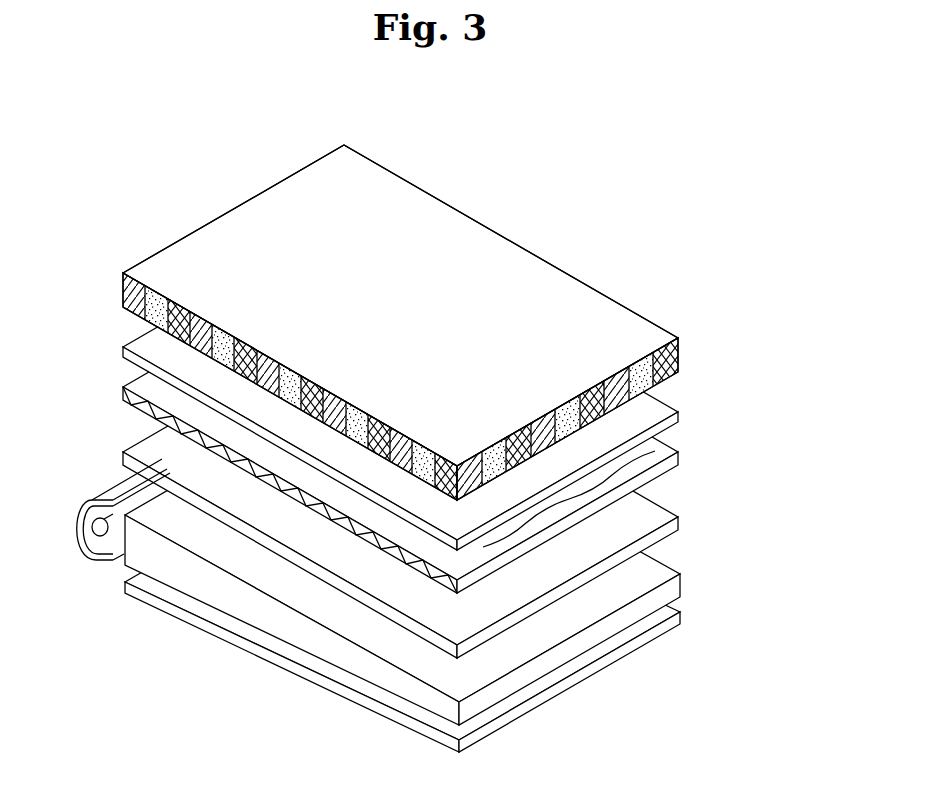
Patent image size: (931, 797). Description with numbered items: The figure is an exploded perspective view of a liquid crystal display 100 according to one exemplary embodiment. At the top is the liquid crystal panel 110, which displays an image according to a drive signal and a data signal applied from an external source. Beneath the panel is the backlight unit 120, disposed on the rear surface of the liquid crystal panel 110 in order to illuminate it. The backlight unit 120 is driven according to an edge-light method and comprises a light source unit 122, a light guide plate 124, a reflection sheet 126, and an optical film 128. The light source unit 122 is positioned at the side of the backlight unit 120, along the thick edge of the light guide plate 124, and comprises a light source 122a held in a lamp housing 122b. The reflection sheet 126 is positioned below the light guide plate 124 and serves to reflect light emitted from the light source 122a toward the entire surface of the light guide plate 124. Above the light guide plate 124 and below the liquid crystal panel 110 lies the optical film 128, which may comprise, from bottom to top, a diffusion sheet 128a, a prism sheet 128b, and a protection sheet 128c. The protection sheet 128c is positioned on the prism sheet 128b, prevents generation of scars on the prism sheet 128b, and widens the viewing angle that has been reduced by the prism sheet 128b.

The liquid crystal display 100 is at (543, 214).
The liquid crystal panel 110 is at (580, 287).
The backlight unit 120 is at (437, 485).
The light source unit 122 is at (96, 575).
The light source 122a is at (99, 534).
The lamp housing 122b is at (79, 502).
The light guide plate 124 is at (657, 561).
The reflection sheet 126 is at (676, 607).
The optical film 128 is at (487, 438).
The diffusion sheet 128a is at (655, 497).
The prism sheet 128b is at (655, 451).
The protection sheet 128c is at (655, 390).